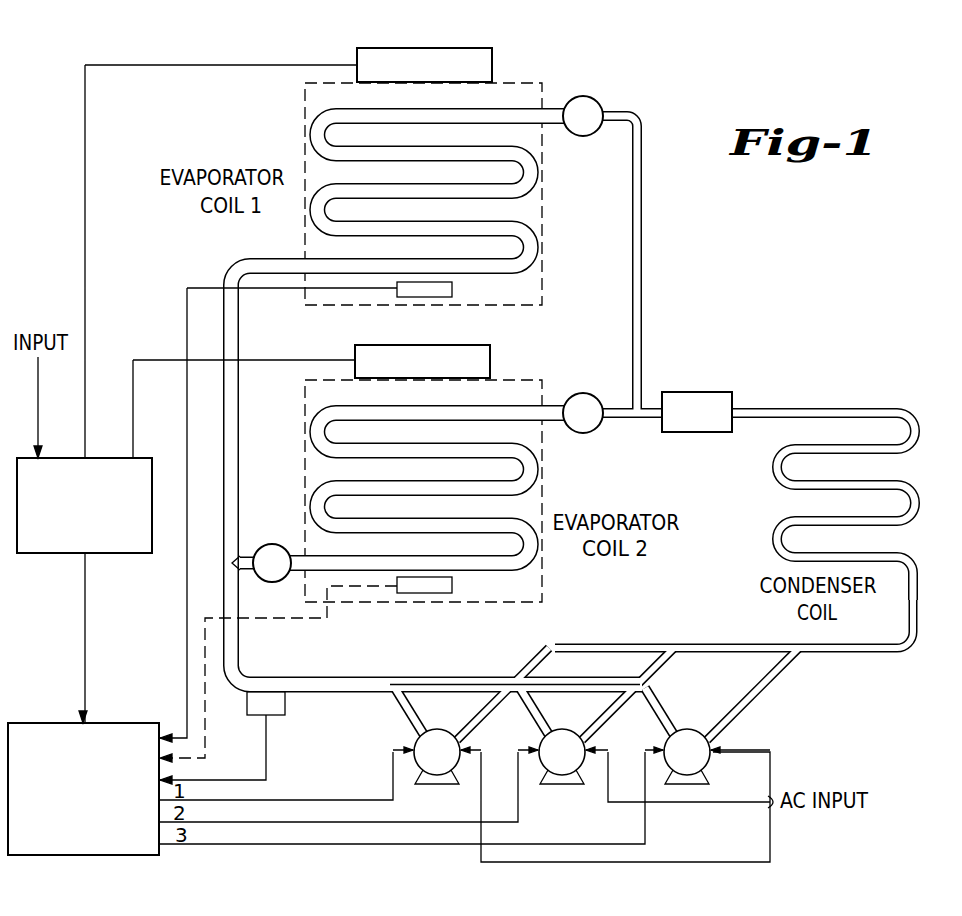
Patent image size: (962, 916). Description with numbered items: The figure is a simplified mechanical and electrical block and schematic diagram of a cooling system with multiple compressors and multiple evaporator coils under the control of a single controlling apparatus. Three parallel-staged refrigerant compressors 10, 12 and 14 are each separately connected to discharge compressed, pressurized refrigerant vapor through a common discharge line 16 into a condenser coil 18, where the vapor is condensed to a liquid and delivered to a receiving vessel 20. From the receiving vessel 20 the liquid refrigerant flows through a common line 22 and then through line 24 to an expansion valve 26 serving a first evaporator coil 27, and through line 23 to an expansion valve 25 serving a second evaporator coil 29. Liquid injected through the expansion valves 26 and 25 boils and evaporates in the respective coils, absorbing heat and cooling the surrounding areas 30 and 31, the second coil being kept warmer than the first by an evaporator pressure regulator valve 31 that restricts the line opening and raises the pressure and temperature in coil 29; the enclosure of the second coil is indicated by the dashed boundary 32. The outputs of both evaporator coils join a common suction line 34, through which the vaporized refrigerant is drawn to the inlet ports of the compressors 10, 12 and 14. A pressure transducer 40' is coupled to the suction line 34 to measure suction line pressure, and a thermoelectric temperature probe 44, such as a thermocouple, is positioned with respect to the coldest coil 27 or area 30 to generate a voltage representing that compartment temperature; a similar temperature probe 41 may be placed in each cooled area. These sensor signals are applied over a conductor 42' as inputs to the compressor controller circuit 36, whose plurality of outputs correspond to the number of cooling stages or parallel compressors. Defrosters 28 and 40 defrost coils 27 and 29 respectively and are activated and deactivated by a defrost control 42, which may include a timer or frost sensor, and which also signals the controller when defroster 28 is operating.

The refrigerant compressor 10 is at (412, 749).
The refrigerant compressor 12 is at (537, 742).
The refrigerant compressor 14 is at (665, 747).
The common discharge line 16 is at (881, 655).
The condenser coil 18 is at (911, 487).
The receiving vessel 20 is at (712, 392).
The common line 22 is at (652, 432).
The line 23 is at (613, 420).
The line 24 is at (652, 280).
The expansion valve 25 is at (590, 394).
The expansion valve 26 is at (597, 102).
The first evaporator coil 27 is at (543, 184).
The defroster 28 is at (492, 62).
The second evaporator coil 29 is at (543, 486).
The area 30 is at (550, 284).
The evaporator pressure regulator valve 31 is at (271, 543).
The evaporator 2 enclosure 32 is at (549, 588).
The common suction line 34 is at (308, 678).
The compressor controller circuit 36 is at (96, 857).
The defroster 40 is at (454, 353).
The pressure transducer 40' is at (288, 712).
The temperature probe 41 is at (425, 595).
The defrost control 42 is at (84, 531).
The conductor 42' is at (240, 749).
The temperature probe 44 is at (433, 297).